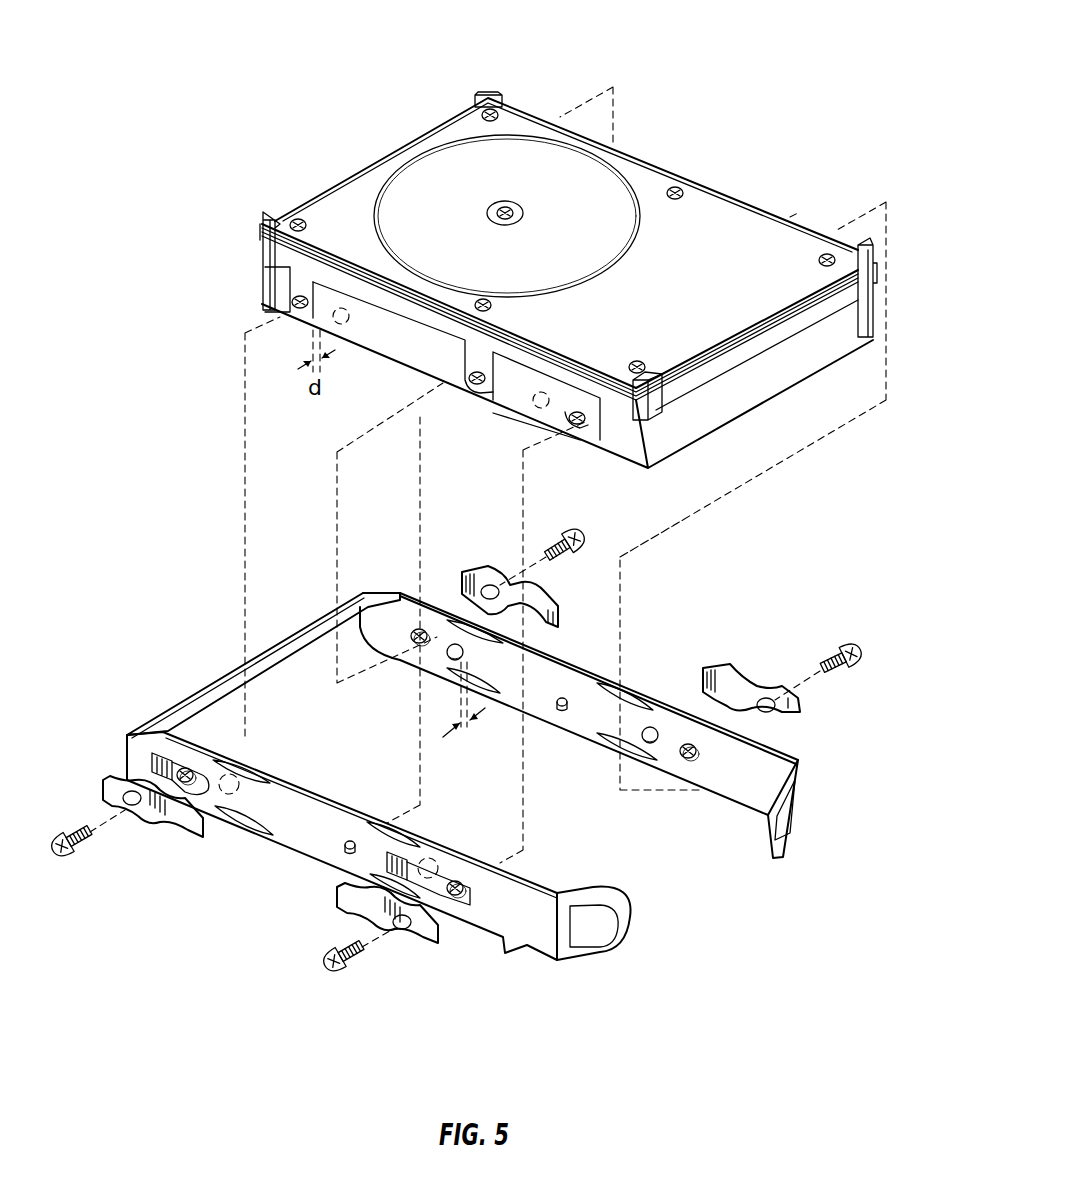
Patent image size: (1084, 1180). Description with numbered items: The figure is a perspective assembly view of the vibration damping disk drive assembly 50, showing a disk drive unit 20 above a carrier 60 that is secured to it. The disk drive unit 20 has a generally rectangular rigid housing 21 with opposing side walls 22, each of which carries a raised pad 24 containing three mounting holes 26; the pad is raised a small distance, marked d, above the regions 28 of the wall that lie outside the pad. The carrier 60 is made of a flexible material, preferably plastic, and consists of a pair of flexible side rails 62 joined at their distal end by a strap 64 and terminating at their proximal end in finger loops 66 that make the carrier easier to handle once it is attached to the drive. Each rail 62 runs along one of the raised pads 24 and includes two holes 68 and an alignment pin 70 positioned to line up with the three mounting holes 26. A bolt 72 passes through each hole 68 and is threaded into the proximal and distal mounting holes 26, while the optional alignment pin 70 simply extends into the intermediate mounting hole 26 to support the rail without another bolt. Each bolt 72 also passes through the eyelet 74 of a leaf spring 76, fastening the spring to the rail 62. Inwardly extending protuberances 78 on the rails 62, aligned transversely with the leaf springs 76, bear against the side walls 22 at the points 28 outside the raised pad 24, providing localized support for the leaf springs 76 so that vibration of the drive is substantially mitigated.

The vibration damping disk drive assembly 50 is at (234, 58).
The disk drive unit 20 is at (704, 168).
The housing 21 is at (758, 375).
The side wall 22 is at (384, 343).
The raised pad 24 is at (263, 247).
The mounting hole 26 is at (296, 300).
The region outside the pad 28 is at (341, 308).
The carrier 60 is at (636, 627).
The side rail 62 is at (572, 682).
The strap 64 is at (306, 624).
The finger loop 66 is at (788, 848).
The hole 68 is at (420, 640).
The alignment pin 70 is at (355, 843).
The bolt 72 is at (590, 535).
The eyelet 74 is at (491, 588).
The leaf spring 76 is at (545, 600).
The protuberance 78 is at (453, 642).